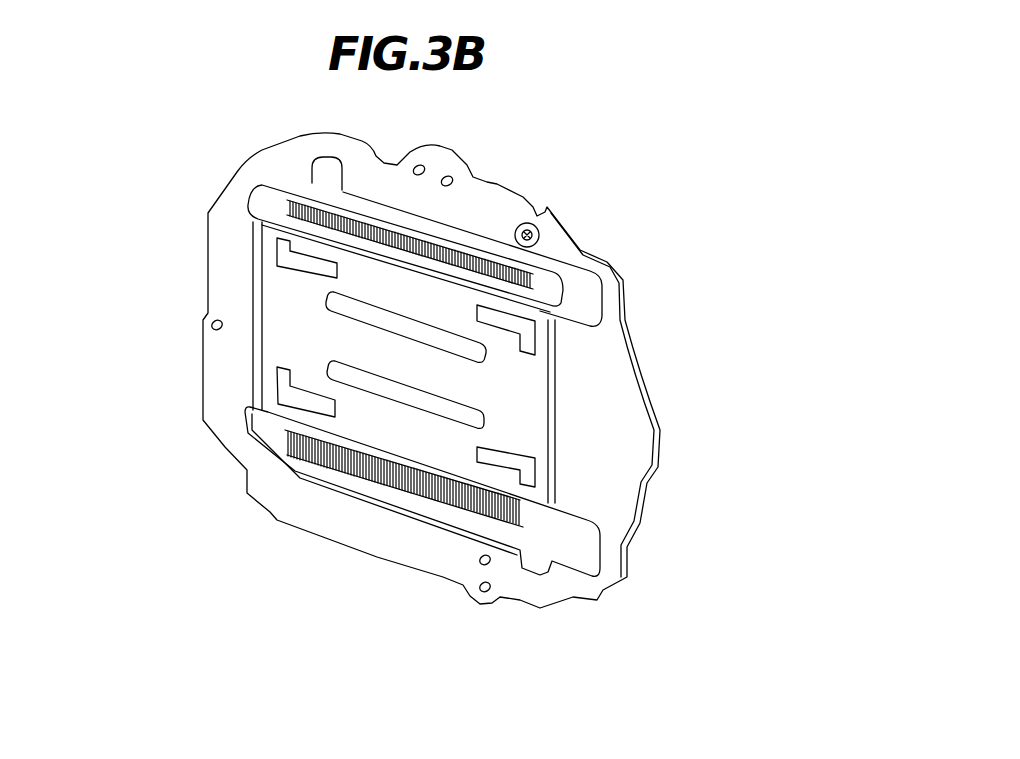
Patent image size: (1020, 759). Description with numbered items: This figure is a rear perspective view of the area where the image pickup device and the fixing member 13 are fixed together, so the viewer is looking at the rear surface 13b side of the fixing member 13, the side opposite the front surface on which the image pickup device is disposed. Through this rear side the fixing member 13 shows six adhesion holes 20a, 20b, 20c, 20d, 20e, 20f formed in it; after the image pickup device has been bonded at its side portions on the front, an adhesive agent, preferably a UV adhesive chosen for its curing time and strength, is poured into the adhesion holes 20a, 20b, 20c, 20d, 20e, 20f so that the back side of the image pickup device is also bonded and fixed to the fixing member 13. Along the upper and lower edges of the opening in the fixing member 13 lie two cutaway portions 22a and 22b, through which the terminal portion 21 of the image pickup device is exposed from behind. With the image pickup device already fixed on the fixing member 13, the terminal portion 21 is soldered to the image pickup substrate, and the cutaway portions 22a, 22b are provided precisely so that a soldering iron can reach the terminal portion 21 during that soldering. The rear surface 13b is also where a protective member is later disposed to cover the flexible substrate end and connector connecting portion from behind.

The fixing member 13 is at (482, 212).
The rear surface 13b is at (620, 338).
The adhesion hole 20a is at (290, 253).
The adhesion hole 20b is at (523, 337).
The adhesion hole 20c is at (397, 323).
The adhesion hole 20d is at (440, 407).
The adhesion hole 20e is at (290, 398).
The adhesion hole 20f is at (530, 467).
The terminal portion 21 is at (513, 270).
The cutaway portion 22a is at (290, 187).
The cutaway portion 22b is at (570, 542).